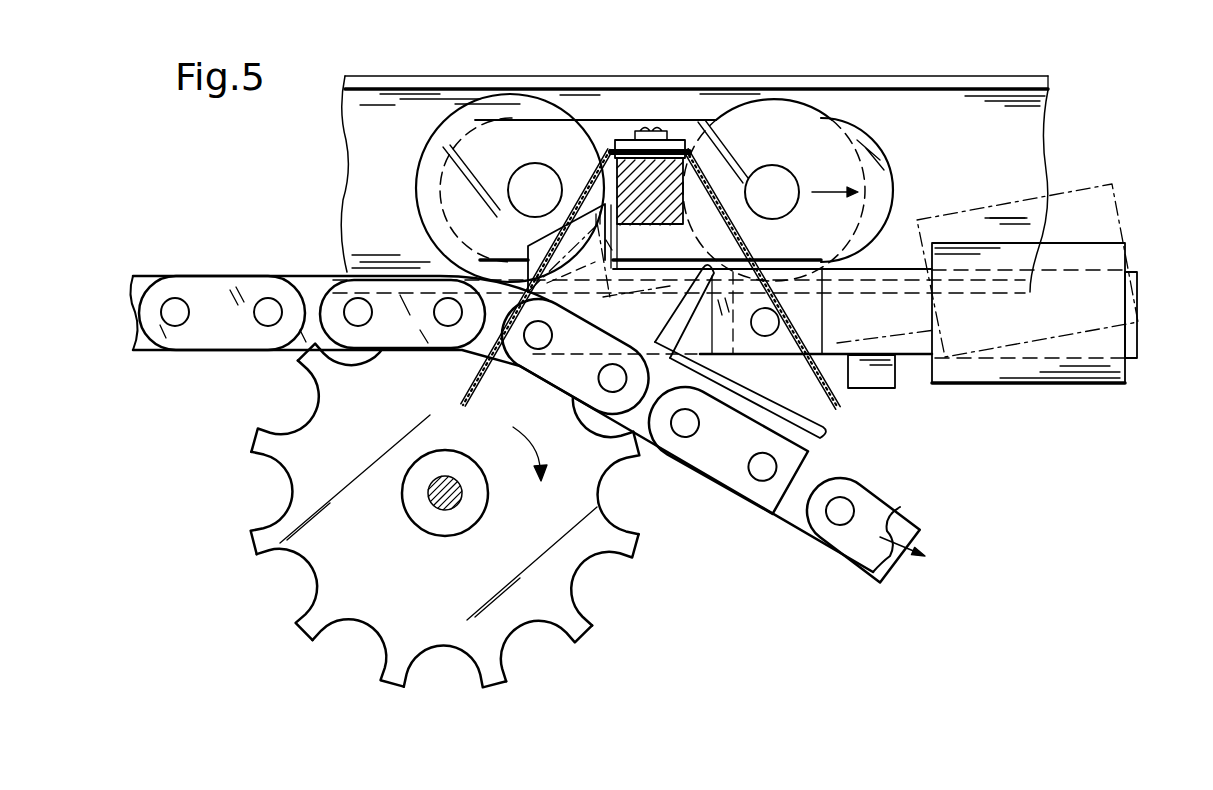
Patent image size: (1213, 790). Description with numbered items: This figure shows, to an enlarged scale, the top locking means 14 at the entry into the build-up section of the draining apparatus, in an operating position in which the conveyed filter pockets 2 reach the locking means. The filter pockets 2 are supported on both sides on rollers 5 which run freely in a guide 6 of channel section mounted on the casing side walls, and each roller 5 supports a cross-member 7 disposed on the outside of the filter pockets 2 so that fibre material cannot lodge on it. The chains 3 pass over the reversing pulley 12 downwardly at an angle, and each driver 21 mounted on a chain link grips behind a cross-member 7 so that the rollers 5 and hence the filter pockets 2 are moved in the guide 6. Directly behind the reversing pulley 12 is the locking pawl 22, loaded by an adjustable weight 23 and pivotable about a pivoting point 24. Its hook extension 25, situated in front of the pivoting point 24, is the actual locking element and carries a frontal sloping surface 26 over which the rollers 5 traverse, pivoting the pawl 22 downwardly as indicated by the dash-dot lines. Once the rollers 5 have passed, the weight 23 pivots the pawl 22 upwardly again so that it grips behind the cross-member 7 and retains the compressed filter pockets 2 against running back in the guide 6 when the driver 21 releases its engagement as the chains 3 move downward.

The filter pockets 2 is at (488, 375).
The chains 3 is at (222, 335).
The rollers 5 is at (525, 100).
The guide 6 is at (926, 100).
The cross-member 7 is at (665, 197).
The reversing pulley 12 is at (429, 595).
The top locking means 14 is at (896, 252).
The driver 21 is at (822, 430).
The locking pawl 22 is at (921, 352).
The weight 23 is at (1032, 367).
The pivoting point 24 is at (768, 338).
The hook extension 25 is at (604, 208).
The frontal sloping surface 26 is at (536, 240).